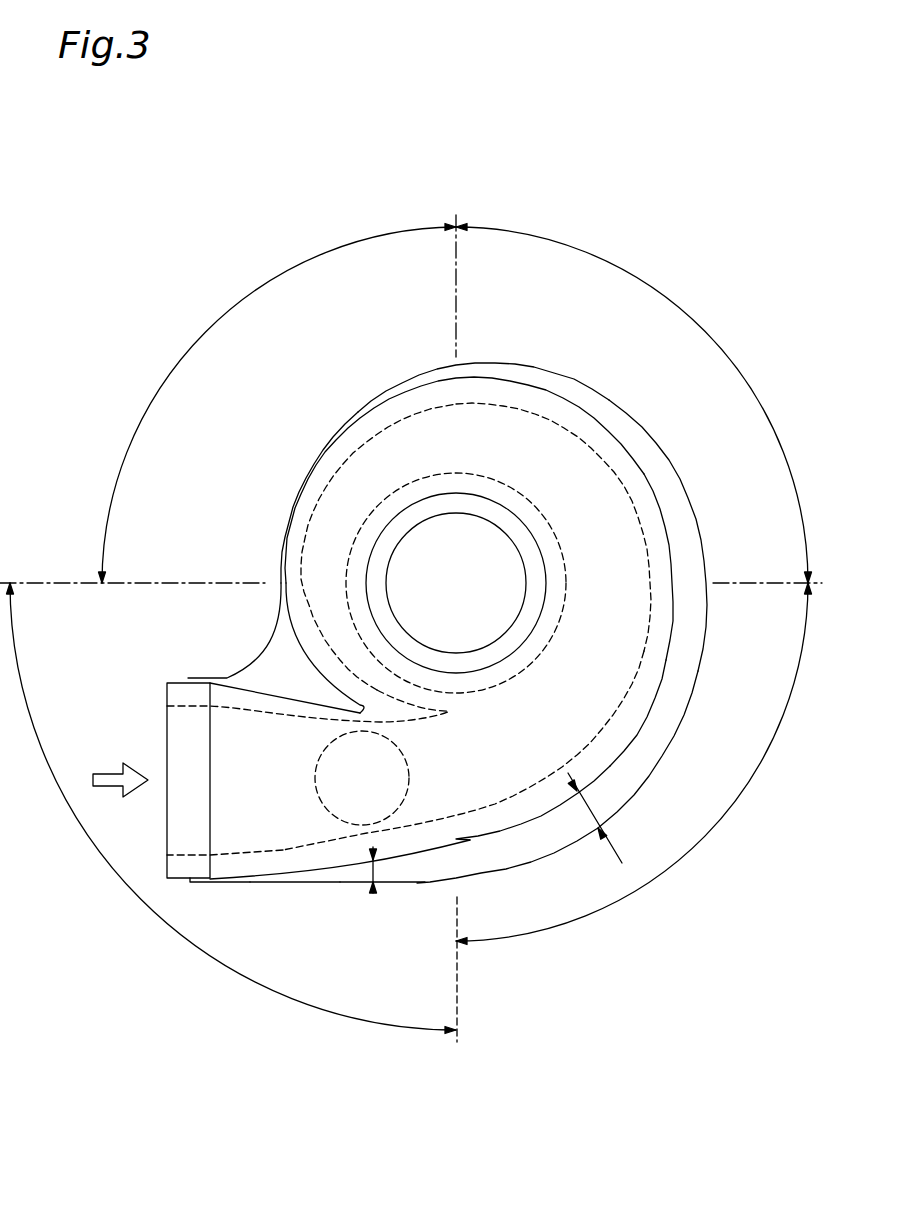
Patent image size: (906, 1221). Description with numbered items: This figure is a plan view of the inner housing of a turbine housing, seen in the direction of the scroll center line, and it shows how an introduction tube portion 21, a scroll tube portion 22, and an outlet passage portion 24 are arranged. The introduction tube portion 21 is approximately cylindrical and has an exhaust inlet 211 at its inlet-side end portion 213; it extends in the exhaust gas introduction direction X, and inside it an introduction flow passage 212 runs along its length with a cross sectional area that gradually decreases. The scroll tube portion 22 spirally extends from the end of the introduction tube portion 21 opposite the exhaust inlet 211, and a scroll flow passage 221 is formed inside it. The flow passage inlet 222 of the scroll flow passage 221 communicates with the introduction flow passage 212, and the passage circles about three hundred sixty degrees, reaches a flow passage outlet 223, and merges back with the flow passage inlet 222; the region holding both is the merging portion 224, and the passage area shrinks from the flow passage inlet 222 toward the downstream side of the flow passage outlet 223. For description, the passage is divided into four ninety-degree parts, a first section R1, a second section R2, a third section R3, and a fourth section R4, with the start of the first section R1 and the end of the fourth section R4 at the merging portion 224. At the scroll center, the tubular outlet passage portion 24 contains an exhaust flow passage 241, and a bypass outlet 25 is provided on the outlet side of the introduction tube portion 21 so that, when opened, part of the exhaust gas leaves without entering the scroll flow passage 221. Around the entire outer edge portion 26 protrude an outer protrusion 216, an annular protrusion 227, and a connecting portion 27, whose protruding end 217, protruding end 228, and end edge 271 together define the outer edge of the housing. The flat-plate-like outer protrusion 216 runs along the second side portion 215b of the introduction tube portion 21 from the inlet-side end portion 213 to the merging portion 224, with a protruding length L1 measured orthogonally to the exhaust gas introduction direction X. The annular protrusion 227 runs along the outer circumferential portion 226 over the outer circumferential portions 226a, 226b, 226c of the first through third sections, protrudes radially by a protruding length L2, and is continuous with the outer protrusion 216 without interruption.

The introduction tube portion 21 is at (233, 720).
The exhaust inlet 211 is at (168, 710).
The introduction flow passage 212 is at (237, 850).
The inlet-side end portion 213 is at (177, 880).
The second side portion 215b is at (290, 883).
The outer protrusion 216 is at (340, 877).
The protruding end 217 is at (417, 883).
The scroll tube portion 22 is at (587, 437).
The scroll flow passage 221 is at (655, 767).
The flow passage inlet 222 is at (470, 803).
The flow passage outlet 223 is at (450, 715).
The merging portion 224 is at (457, 830).
The outer circumferential portion 226 is at (668, 550).
The outer circumferential portion 226a is at (523, 826).
The outer circumferential portion 226b is at (549, 393).
The outer circumferential portion 226c is at (344, 431).
The annular protrusion 227 is at (685, 688).
The protruding end 228 is at (707, 632).
The outlet passage portion 24 is at (497, 502).
The exhaust flow passage 241 is at (500, 540).
The bypass outlet 25 is at (313, 793).
The outer edge portion 26 is at (688, 507).
The connecting portion 27 is at (280, 693).
The end edge 271 is at (273, 645).
The first section R1 is at (634, 764).
The second section R2 is at (634, 404).
The third section R3 is at (278, 404).
The fourth section R4 is at (232, 808).
The protruding length L1 is at (389, 886).
The protruding length L2 is at (609, 818).
The exhaust gas introduction direction X is at (116, 756).